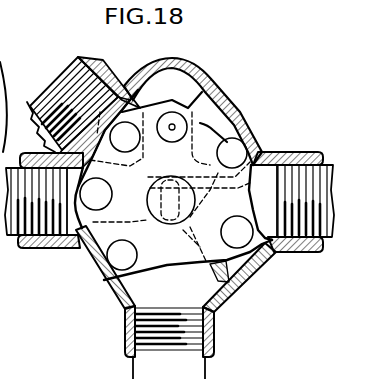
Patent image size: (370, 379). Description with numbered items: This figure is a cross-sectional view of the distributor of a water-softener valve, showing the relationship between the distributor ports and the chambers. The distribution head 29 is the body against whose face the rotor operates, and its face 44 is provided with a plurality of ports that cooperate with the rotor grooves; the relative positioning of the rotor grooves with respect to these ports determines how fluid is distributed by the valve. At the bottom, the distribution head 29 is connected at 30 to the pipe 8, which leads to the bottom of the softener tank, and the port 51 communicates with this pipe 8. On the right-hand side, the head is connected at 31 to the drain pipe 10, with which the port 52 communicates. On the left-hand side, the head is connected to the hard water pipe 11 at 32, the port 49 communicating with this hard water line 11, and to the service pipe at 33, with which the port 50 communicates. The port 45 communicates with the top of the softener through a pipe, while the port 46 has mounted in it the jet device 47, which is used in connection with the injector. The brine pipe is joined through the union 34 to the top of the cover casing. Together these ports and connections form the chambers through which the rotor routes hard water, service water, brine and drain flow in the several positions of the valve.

The pipe 8 is at (196, 370).
The drain pipe 10 is at (332, 164).
The hard water pipe 11 is at (75, 57).
The distribution head 29 is at (216, 82).
The connection to pipe 8 30 is at (215, 328).
The connection to drain pipe 31 is at (298, 152).
The connection to hard water pipe 32 is at (100, 58).
The connection to service pipe 33 is at (40, 249).
The union 34 is at (0, 246).
The face of the distributor 44 is at (172, 252).
The port 45 is at (235, 150).
The port 46 is at (173, 121).
The jet device 47 is at (177, 132).
The port 49 is at (123, 122).
The port 50 is at (110, 189).
The port 51 is at (106, 272).
The port 52 is at (245, 246).